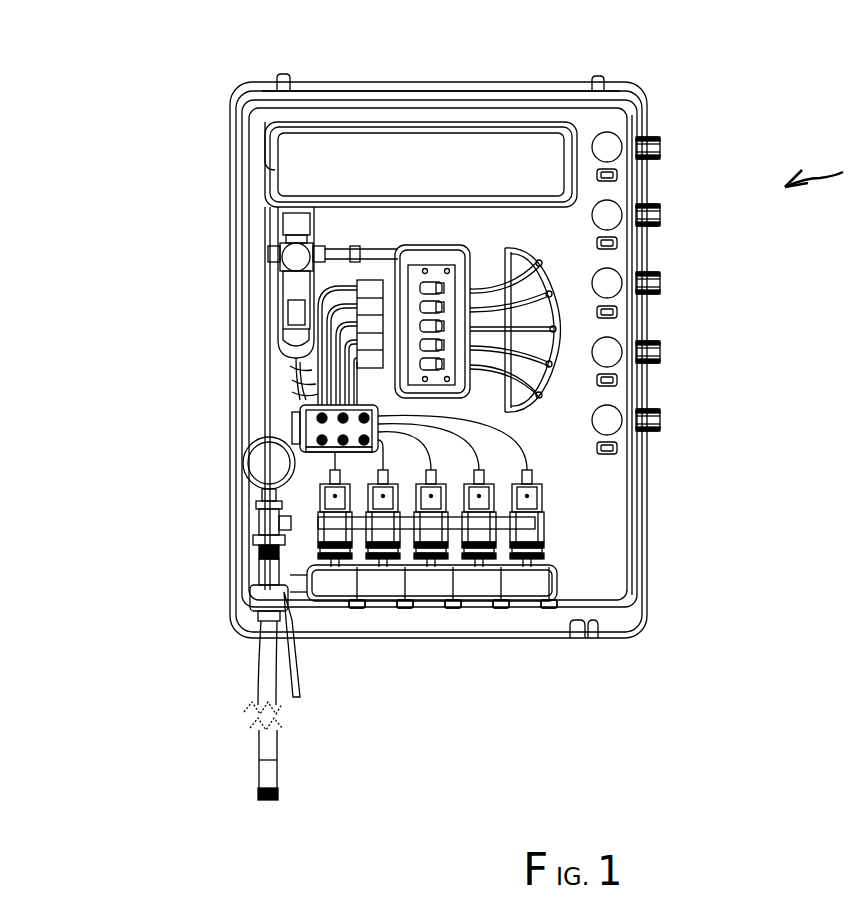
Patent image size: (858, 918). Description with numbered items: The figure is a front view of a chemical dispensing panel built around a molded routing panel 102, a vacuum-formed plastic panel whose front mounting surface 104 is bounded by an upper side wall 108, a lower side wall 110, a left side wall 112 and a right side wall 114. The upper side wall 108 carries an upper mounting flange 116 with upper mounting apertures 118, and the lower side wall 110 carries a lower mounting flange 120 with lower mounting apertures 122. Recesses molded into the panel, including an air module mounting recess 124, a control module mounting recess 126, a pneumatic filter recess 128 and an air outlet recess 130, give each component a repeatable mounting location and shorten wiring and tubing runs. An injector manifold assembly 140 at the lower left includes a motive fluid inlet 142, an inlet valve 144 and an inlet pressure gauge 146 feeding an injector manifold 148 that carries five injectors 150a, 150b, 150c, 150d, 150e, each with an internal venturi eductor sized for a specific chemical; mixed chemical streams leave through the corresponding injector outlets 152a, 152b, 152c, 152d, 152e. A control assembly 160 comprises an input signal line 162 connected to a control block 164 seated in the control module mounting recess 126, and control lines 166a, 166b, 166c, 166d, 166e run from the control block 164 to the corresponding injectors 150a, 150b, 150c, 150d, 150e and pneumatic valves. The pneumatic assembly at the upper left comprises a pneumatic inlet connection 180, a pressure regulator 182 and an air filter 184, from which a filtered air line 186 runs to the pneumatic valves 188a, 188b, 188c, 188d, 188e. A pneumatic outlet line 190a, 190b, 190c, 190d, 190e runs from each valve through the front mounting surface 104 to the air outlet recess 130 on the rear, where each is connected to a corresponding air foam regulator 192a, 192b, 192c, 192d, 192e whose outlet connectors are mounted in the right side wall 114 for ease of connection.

The molded routing panel 102 is at (607, 520).
The front mounting surface 104 is at (600, 492).
The upper side wall 108 is at (370, 100).
The lower side wall 110 is at (617, 613).
The left side wall 112 is at (245, 347).
The right side wall 114 is at (607, 585).
The upper mounting flange 116 is at (462, 96).
The upper mounting apertures 118 is at (283, 74).
The lower mounting flange 120 is at (573, 628).
The lower mounting apertures 122 is at (592, 632).
The air module mounting recess 124 is at (468, 250).
The control module mounting recess 126 is at (292, 390).
The pneumatic filter recess 128 is at (265, 162).
The air outlet recess 130 is at (530, 430).
The injector manifold assembly 140 is at (548, 562).
The motive fluid inlet 142 is at (262, 655).
The inlet valve 144 is at (255, 628).
The inlet pressure gauge 146 is at (245, 470).
The injector manifold 148 is at (305, 580).
The injector 150a is at (347, 594).
The injector 150b is at (395, 594).
The injector 150c is at (443, 594).
The injector 150d is at (491, 594).
The injector 150e is at (539, 594).
The injector outlet 152a is at (371, 594).
The injector outlet 152b is at (419, 594).
The injector outlet 152c is at (467, 594).
The injector outlet 152d is at (515, 594).
The injector outlet 152e is at (563, 594).
The control assembly 160 is at (300, 447).
The input signal line 162 is at (300, 432).
The control block 164 is at (300, 412).
The control line 166a is at (340, 470).
The control line 166b is at (388, 466).
The control line 166c is at (436, 462).
The control line 166d is at (484, 458).
The control line 166e is at (532, 470).
The pneumatic inlet connection 180 is at (272, 296).
The pressure regulator 182 is at (276, 224).
The air filter 184 is at (283, 316).
The filtered air line 186 is at (348, 250).
The pneumatic valve 188a is at (392, 285).
The pneumatic valve 188b is at (402, 305).
The pneumatic valve 188c is at (414, 325).
The pneumatic valve 188d is at (414, 345).
The pneumatic valve 188e is at (440, 370).
The pneumatic outlet line 190a is at (492, 272).
The pneumatic outlet line 190b is at (505, 300).
The pneumatic outlet line 190c is at (528, 300).
The pneumatic outlet line 190d is at (500, 360).
The pneumatic outlet line 190e is at (515, 390).
The air foam regulator 192a is at (660, 148).
The air foam regulator 192b is at (660, 215).
The air foam regulator 192c is at (660, 283).
The air foam regulator 192d is at (660, 352).
The air foam regulator 192e is at (660, 420).